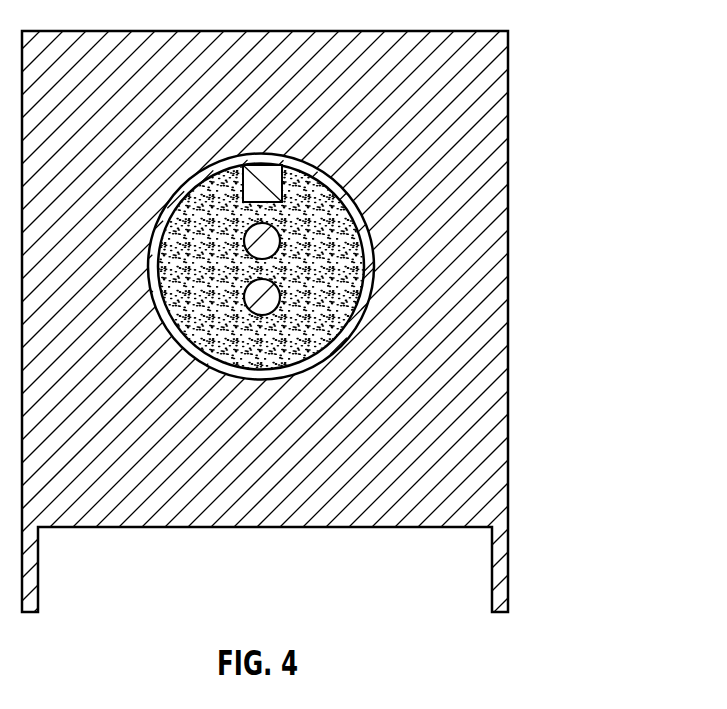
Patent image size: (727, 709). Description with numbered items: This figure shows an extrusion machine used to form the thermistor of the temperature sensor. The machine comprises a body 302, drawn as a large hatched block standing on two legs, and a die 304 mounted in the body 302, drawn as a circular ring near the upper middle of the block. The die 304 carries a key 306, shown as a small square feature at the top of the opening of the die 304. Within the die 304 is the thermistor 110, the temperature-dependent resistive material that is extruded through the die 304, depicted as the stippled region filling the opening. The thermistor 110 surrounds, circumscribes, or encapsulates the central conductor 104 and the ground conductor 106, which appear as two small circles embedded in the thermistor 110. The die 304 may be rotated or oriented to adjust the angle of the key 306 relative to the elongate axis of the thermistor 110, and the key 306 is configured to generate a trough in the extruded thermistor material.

The body 302 is at (510, 362).
The die 304 is at (320, 165).
The key 306 is at (243, 190).
The thermistor 110 is at (182, 248).
The central conductor 104 is at (262, 241).
The ground conductor 106 is at (262, 297).